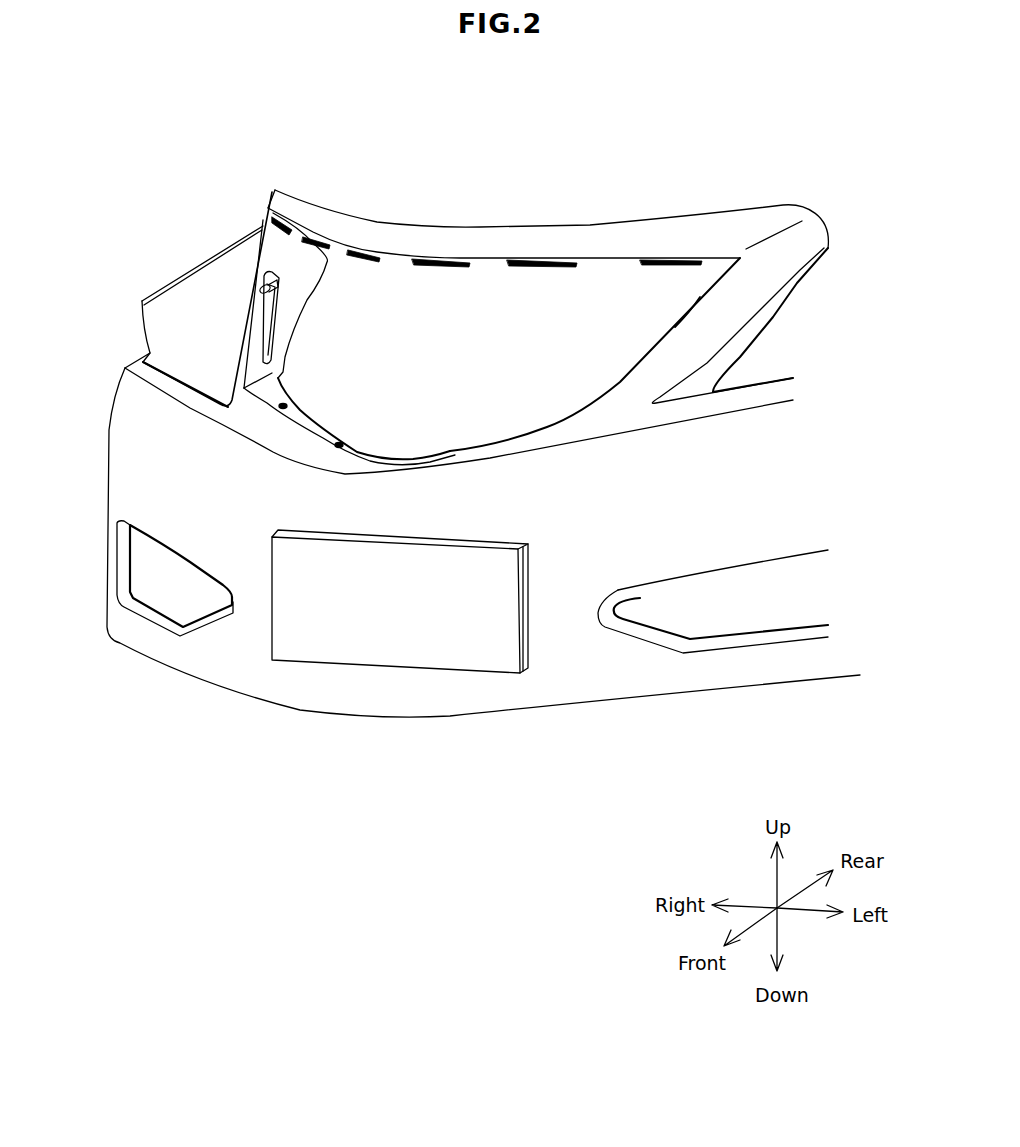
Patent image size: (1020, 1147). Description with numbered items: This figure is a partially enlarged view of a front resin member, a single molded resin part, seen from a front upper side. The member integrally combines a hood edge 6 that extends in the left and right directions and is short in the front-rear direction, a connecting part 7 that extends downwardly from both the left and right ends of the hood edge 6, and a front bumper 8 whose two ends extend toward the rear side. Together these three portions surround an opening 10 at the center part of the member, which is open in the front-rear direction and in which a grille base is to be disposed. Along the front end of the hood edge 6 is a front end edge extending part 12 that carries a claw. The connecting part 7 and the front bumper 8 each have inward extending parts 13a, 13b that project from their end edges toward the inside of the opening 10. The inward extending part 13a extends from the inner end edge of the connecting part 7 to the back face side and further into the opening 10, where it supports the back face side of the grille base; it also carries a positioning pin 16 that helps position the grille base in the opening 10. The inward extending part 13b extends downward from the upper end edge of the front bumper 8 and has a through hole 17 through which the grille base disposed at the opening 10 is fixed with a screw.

The hood edge 6 is at (352, 230).
The connecting part 7 is at (245, 312).
The front bumper 8 is at (620, 667).
The opening 10 is at (486, 372).
The front end edge extending part 12 is at (440, 267).
The inward extending part 13a is at (260, 333).
The inward extending part 13b is at (320, 432).
The positioning pin 16 is at (265, 277).
The through hole 17 is at (351, 442).